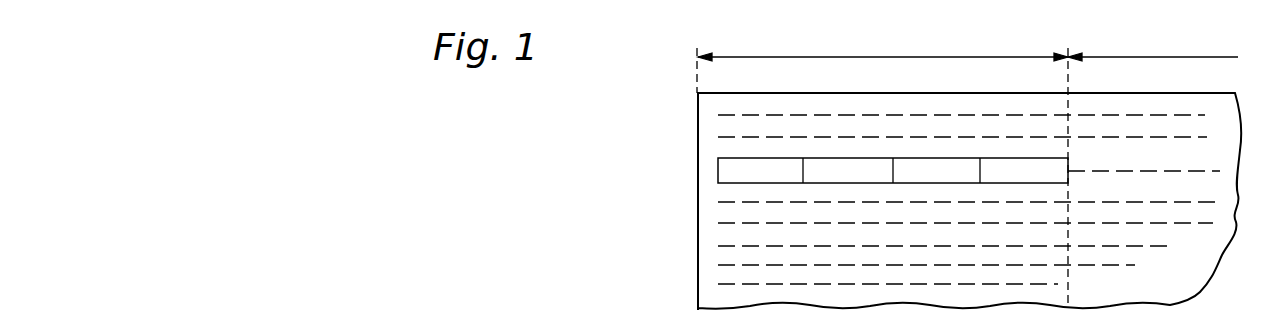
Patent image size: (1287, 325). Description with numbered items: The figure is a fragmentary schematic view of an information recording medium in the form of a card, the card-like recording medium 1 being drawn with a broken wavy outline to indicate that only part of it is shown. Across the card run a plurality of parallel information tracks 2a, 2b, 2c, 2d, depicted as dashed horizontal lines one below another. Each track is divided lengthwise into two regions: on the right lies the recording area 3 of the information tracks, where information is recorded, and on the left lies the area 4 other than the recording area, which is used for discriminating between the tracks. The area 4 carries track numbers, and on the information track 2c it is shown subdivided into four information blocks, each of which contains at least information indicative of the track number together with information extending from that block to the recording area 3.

The card-like recording medium 1 is at (1222, 127).
The information track 2a is at (712, 116).
The information track 2b is at (712, 137).
The information track 2c is at (714, 172).
The information track 2d is at (714, 203).
The recording area 3 is at (1153, 48).
The area other than the recording area 4 is at (883, 48).